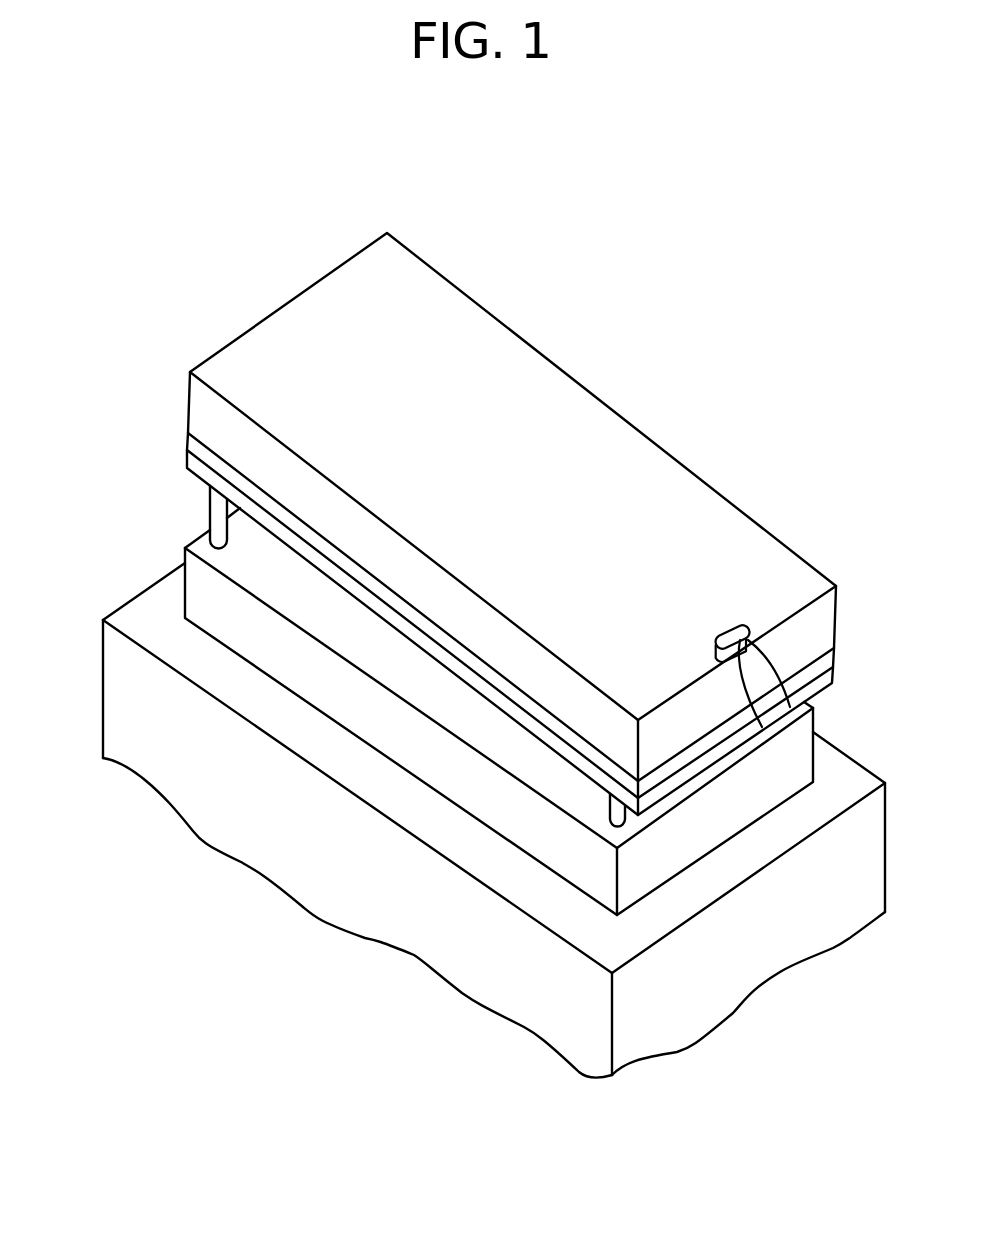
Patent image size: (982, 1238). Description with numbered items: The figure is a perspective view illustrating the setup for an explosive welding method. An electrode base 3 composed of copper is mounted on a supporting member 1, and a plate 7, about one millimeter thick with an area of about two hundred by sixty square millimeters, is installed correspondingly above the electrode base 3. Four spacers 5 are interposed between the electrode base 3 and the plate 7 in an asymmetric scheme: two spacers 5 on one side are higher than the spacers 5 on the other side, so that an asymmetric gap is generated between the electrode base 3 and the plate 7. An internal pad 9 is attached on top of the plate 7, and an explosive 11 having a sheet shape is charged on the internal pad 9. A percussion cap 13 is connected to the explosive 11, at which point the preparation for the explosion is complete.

The supporting member 1 is at (148, 625).
The electrode base 3 is at (202, 595).
The spacers 5 is at (222, 515).
The plate 7 is at (200, 473).
The internal pad 9 is at (203, 455).
The explosive 11 is at (212, 418).
The percussion cap 13 is at (732, 623).